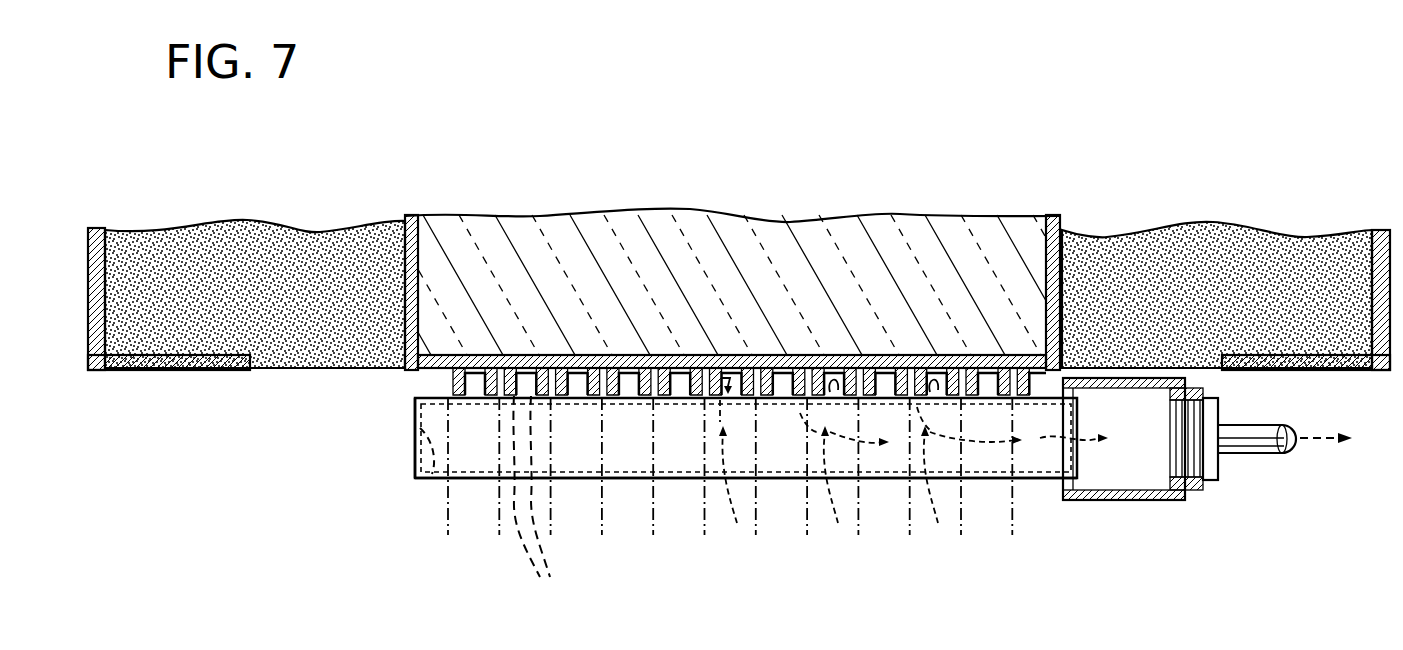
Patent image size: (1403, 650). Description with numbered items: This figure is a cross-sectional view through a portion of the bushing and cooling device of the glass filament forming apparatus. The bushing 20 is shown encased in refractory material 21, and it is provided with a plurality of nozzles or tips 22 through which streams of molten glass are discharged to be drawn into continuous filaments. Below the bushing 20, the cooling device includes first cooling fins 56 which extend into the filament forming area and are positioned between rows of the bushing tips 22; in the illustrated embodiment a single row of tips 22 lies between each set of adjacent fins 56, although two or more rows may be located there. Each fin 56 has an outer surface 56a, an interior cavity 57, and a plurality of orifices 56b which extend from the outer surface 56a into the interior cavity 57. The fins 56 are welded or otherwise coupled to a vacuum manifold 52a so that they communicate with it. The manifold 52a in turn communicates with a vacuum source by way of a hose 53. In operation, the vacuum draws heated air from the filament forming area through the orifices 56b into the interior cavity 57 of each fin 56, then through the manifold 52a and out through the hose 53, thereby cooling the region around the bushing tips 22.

The bushing 20 is at (420, 243).
The refractory material 21 is at (1162, 256).
The nozzles or tips 22 is at (575, 392).
The first manifold 52a is at (1128, 502).
The hose 53 is at (1253, 447).
The first cooling fin 56 is at (1032, 457).
The outer surface 56a is at (673, 460).
The orifices 56b is at (548, 506).
The interior cavity 57 is at (430, 476).